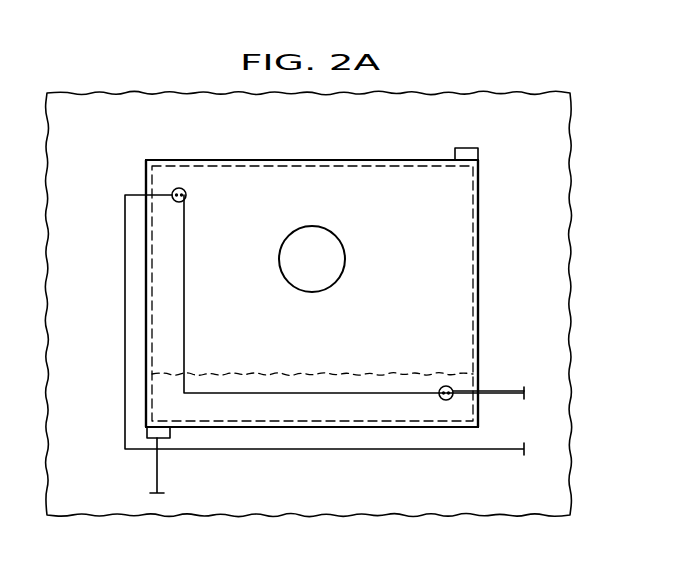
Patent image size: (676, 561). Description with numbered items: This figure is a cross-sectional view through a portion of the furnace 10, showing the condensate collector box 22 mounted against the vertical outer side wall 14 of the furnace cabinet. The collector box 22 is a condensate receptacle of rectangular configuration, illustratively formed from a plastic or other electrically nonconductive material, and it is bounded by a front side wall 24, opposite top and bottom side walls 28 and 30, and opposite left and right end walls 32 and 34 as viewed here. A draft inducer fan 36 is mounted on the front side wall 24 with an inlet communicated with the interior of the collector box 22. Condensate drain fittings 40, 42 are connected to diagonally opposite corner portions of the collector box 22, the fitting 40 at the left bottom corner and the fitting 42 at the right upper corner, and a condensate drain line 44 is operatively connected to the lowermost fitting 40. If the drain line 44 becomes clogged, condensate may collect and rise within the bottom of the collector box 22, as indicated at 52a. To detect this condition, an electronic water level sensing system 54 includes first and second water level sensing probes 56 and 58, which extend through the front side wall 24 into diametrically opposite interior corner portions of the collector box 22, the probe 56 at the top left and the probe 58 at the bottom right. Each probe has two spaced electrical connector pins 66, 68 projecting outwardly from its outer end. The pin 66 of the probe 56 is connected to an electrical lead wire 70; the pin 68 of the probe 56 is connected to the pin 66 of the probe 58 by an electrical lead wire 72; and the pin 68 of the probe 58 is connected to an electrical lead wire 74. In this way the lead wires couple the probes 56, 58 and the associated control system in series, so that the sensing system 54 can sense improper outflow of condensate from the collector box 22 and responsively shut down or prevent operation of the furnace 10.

The furnace 10 is at (143, 69).
The vertical outer side wall 14 is at (240, 495).
The collector box 22 is at (482, 225).
The front side wall 24 is at (384, 208).
The top side wall 28 is at (310, 160).
The bottom side wall 30 is at (316, 428).
The left end wall 32 is at (145, 273).
The right end wall 34 is at (480, 292).
The draft inducer fan 36 is at (346, 259).
The condensate drain fitting 40 is at (146, 432).
The condensate drain fitting 42 is at (479, 154).
The condensate drain line 44 is at (156, 466).
The collected condensate 52a is at (300, 371).
The electronic water level sensing system 54 is at (206, 247).
The first water level sensing probe 56 is at (177, 187).
The second water level sensing probe 58 is at (445, 385).
The electrical connector pin 66 is at (173, 190).
The electrical connector pin 68 is at (186, 195).
The electrical lead wire 70 is at (124, 332).
The electrical lead wire 72 is at (186, 292).
The electrical lead wire 74 is at (498, 390).